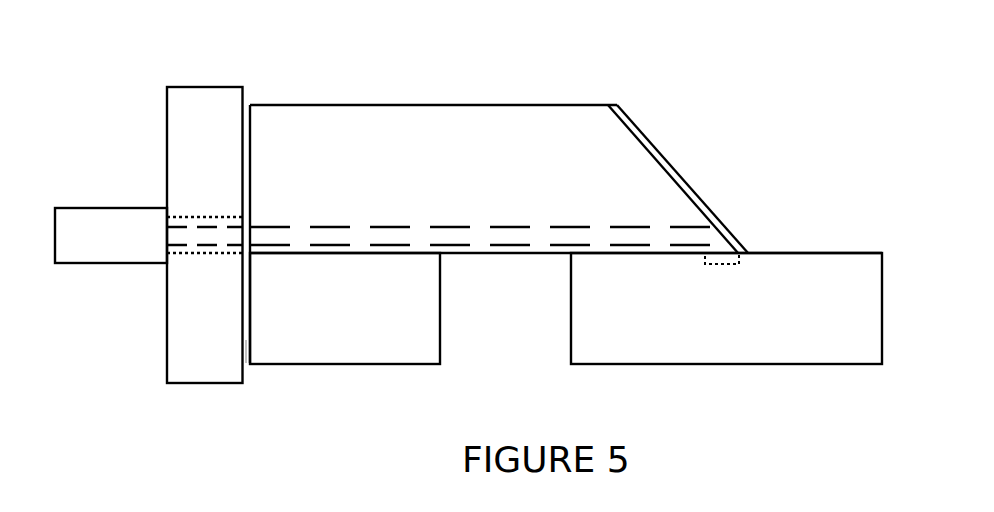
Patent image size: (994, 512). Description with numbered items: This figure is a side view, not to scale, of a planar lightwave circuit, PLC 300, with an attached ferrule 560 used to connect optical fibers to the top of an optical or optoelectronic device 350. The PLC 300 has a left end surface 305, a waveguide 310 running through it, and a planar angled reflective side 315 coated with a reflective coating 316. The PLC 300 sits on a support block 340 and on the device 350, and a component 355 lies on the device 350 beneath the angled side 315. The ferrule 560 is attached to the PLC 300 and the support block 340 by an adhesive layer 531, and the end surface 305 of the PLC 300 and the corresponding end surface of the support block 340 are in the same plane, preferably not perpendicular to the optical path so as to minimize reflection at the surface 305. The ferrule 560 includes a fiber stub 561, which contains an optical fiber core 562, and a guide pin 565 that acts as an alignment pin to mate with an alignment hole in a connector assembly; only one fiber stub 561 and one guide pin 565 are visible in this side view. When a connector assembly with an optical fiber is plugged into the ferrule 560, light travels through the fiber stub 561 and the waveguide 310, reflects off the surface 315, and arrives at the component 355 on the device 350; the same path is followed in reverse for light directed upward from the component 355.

The PLC 300 is at (322, 154).
The left side 305 is at (253, 205).
The waveguide 310 is at (372, 234).
The planar angled reflective side 315 is at (665, 172).
The reflective coating 316 is at (655, 148).
The support block 340 is at (322, 349).
The optical or optoelectronic device 350 is at (840, 351).
The component 355 is at (738, 270).
The adhesive layer 531 is at (246, 358).
The ferrule 560 is at (225, 124).
The fiber stub 561 is at (196, 216).
The optical fiber core 562 is at (203, 233).
The guide pin 565 is at (130, 246).